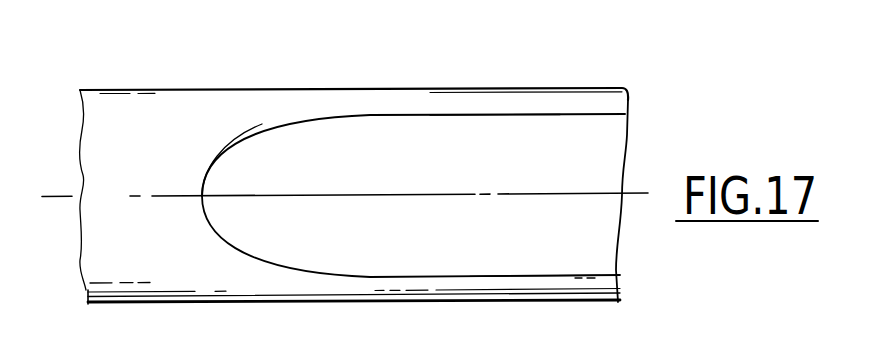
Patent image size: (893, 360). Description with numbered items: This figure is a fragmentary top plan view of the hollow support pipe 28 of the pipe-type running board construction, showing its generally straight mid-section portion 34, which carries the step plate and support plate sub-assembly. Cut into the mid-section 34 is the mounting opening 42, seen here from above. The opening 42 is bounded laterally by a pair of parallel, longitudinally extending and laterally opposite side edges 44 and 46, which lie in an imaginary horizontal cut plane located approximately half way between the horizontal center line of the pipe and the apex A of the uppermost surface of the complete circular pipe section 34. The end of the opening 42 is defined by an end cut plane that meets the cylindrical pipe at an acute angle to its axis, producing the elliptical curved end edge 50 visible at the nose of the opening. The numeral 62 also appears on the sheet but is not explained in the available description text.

The apex A is at (55, 196).
The hollow support pipe 28 is at (84, 293).
The mid-section portion 34 is at (205, 286).
The mounting opening 42 is at (466, 234).
The side edge 44 is at (530, 273).
The side edge 46 is at (497, 116).
The elliptical curved end edge 50 is at (265, 137).
The edge 62 is at (372, 356).